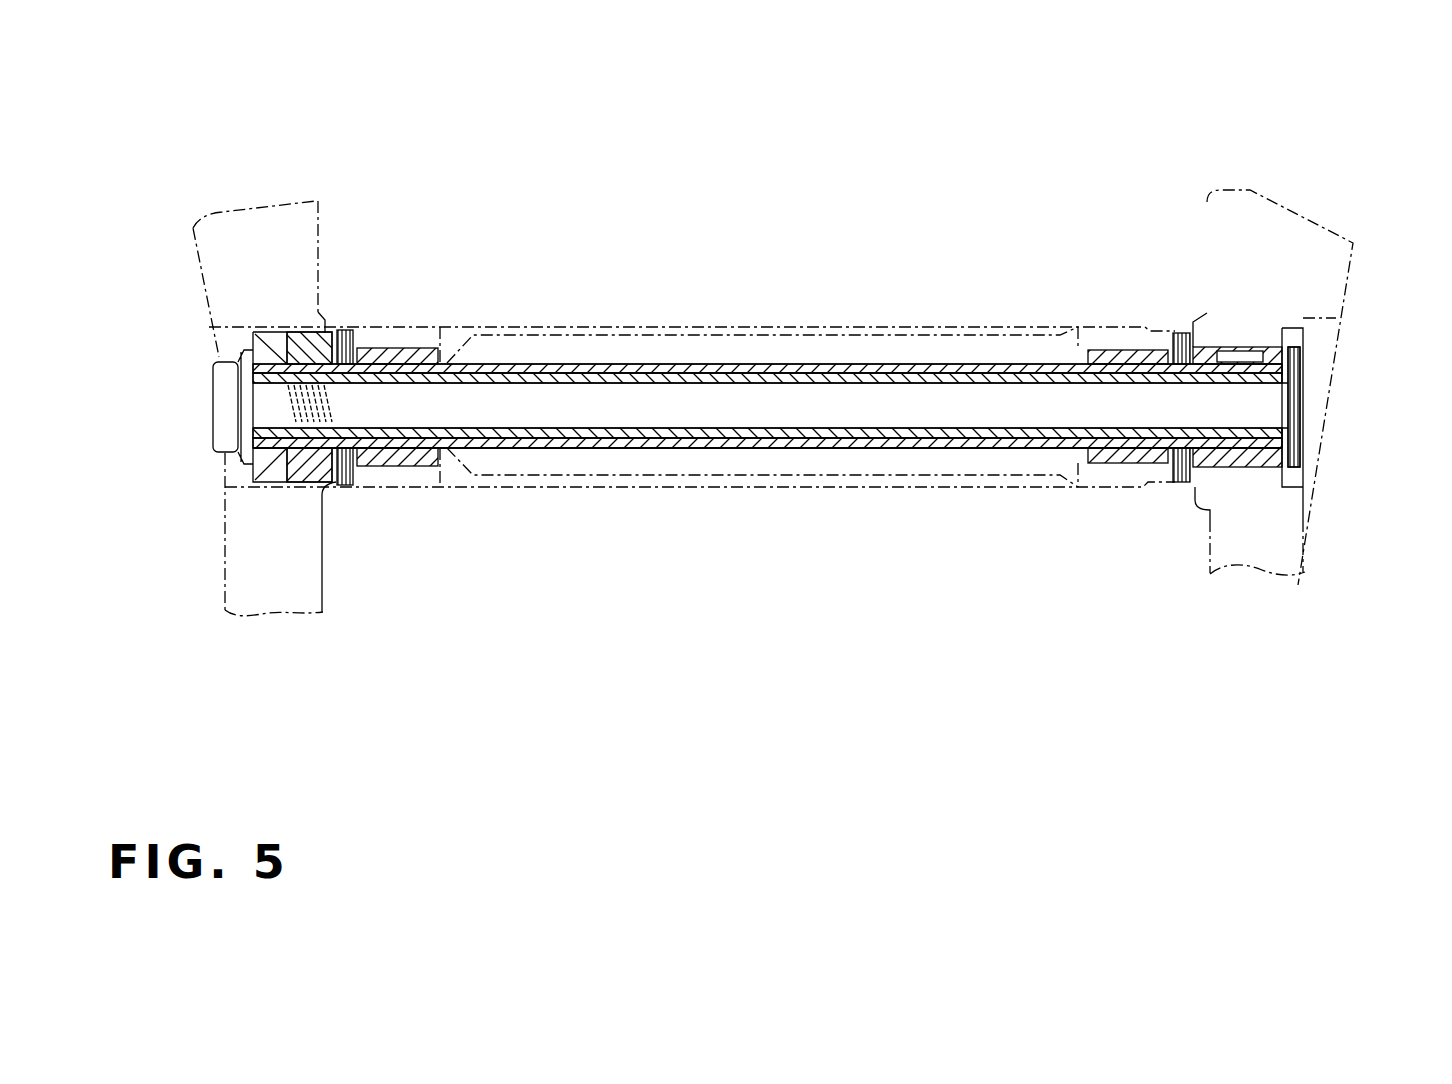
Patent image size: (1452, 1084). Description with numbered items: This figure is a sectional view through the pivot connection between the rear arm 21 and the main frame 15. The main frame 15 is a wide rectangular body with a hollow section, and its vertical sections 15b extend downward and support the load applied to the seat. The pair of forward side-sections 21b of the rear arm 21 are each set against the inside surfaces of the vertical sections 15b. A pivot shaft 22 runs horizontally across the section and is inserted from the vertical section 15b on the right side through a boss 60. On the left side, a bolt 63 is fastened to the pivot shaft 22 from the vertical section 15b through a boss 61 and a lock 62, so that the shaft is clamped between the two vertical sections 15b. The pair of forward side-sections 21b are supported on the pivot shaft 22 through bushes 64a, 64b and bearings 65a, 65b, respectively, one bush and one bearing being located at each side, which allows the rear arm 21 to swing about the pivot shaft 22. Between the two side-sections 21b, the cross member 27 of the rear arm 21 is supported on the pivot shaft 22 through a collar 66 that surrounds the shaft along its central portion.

The main frame 15 is at (368, 185).
The vertical section 15b is at (207, 249).
The rear arm 21 is at (366, 632).
The forward side-section 21b is at (437, 348).
The pivot shaft 22 is at (780, 365).
The cross member 27 is at (797, 462).
The boss 60 is at (1275, 347).
The boss 61 is at (320, 488).
The lock 62 is at (258, 332).
The bolt 63 is at (222, 408).
The bush 64a is at (1160, 345).
The bush 64b is at (365, 347).
The bearing 65a is at (1107, 348).
The bearing 65b is at (397, 347).
The collar 66 is at (670, 363).